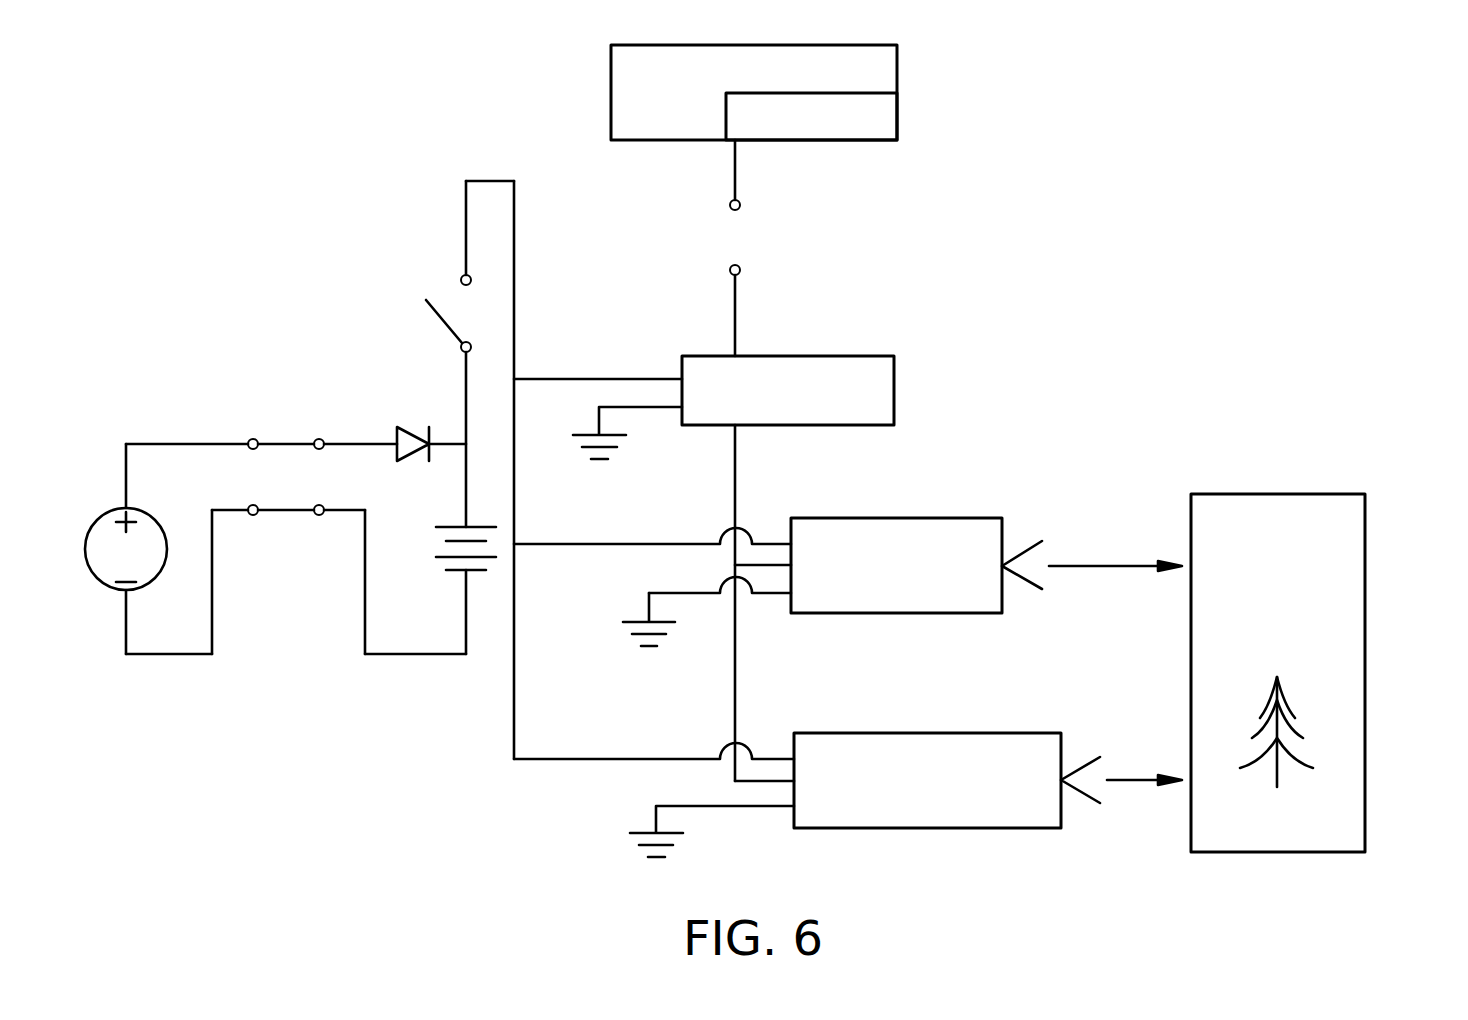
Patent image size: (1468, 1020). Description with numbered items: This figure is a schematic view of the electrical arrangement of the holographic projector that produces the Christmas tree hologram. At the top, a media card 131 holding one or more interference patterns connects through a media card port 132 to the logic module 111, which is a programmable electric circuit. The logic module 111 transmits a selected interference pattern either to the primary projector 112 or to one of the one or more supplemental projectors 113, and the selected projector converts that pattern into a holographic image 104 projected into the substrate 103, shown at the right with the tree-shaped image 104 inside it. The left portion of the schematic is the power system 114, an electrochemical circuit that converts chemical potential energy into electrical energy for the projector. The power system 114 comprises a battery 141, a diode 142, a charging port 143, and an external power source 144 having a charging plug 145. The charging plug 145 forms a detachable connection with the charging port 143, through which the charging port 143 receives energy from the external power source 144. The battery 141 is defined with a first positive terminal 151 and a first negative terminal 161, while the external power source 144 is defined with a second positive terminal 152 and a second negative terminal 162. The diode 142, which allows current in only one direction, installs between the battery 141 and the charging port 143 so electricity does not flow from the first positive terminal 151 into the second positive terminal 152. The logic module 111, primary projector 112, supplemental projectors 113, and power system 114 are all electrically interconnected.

The substrate 103 is at (1340, 609).
The image 104 is at (1313, 729).
The logic module 111 is at (864, 366).
The primary projector 112 is at (972, 540).
The supplemental projectors 113 is at (1035, 738).
The power system 114 is at (290, 512).
The media card 131 is at (758, 153).
The media card port 132 is at (741, 268).
The battery 141 is at (432, 548).
The diode 142 is at (410, 432).
The charging port 143 is at (319, 438).
The external power source 144 is at (158, 553).
The charging plug 145 is at (253, 438).
The first positive terminal 151 is at (466, 512).
The second positive terminal 152 is at (150, 522).
The first negative terminal 161 is at (466, 593).
The second negative terminal 162 is at (128, 590).